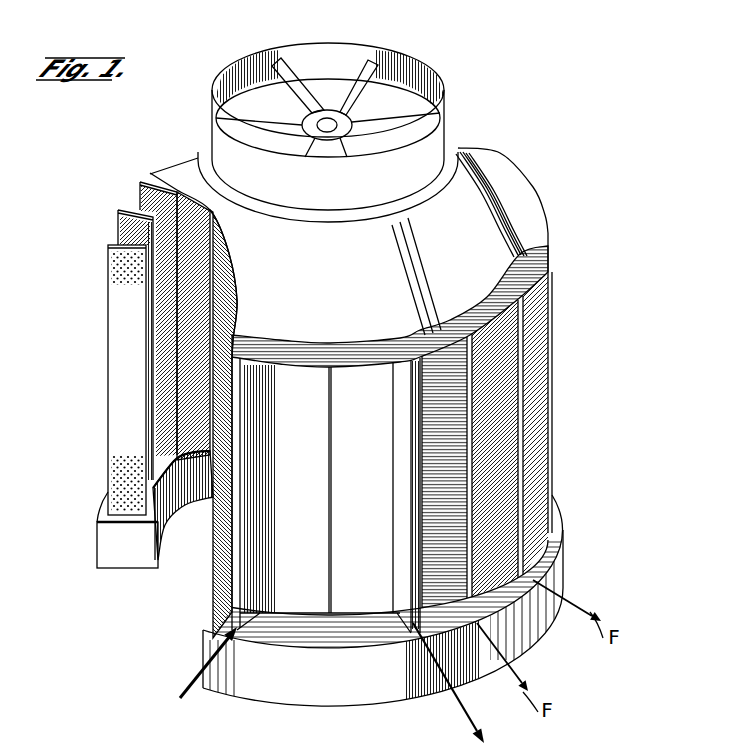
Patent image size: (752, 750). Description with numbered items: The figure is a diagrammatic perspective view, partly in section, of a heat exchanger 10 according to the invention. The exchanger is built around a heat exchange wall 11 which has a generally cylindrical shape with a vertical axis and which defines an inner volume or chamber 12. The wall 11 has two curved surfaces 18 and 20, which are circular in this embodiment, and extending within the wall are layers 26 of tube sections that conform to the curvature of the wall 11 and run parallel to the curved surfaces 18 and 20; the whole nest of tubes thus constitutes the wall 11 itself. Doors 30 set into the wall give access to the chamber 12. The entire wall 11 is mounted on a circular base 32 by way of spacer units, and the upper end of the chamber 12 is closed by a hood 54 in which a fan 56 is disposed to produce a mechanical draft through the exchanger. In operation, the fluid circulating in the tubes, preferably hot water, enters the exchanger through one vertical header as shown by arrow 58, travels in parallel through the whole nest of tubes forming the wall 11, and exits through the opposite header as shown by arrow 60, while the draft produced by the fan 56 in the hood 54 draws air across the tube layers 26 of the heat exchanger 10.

The heat exchanger 10 is at (575, 178).
The heat exchange wall 11 is at (553, 372).
The inner volume or chamber 12 is at (201, 580).
The curved surface 18 is at (118, 511).
The curved surface 20 is at (120, 238).
The layers of tube sections 26 is at (537, 462).
The doors 30 is at (287, 492).
The circular base 32 is at (243, 690).
The hood 54 is at (468, 216).
The fan 56 is at (323, 99).
The arrow 58 is at (190, 681).
The arrow 60 is at (472, 722).